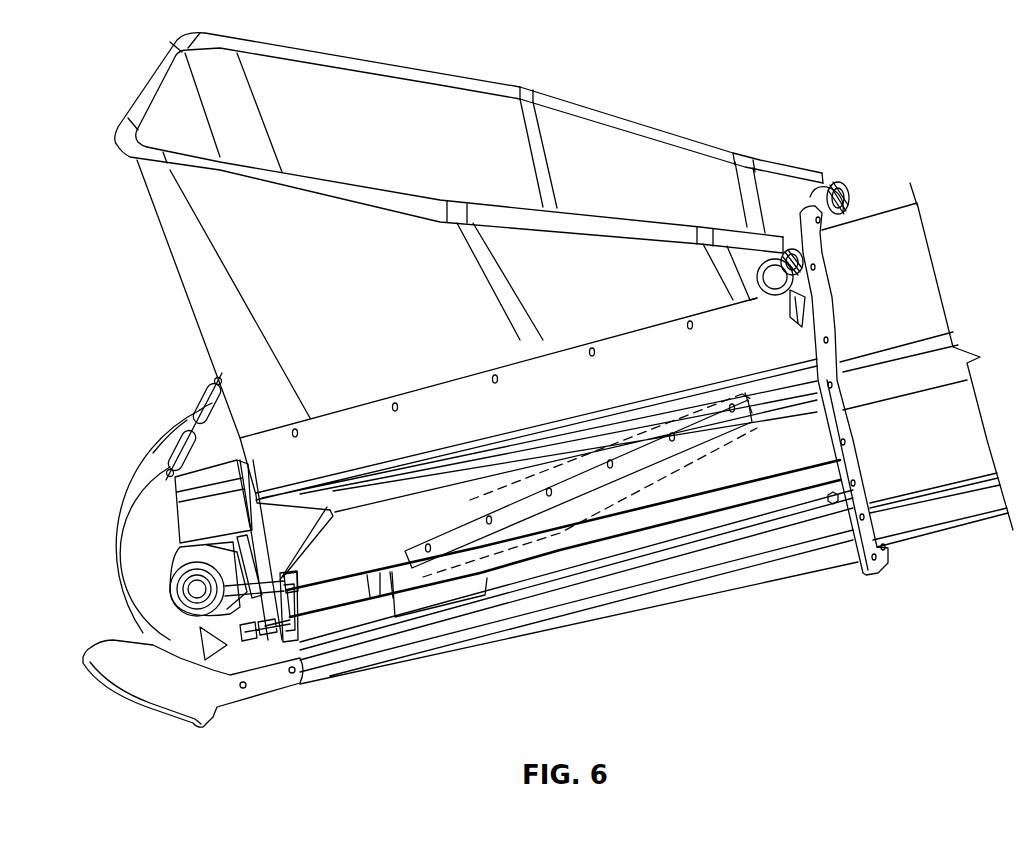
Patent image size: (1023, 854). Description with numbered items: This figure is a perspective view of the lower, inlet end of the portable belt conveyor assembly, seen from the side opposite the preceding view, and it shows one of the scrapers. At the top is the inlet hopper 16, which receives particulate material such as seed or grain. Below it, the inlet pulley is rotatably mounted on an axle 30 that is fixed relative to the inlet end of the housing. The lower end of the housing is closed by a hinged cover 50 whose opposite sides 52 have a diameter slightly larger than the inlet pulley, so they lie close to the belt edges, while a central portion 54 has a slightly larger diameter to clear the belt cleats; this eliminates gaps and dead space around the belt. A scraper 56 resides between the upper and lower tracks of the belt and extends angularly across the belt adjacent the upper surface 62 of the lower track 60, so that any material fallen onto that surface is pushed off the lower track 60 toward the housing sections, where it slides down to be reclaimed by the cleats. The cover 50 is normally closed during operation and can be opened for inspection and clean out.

The inlet hopper 16 is at (193, 275).
The axle 30 is at (193, 590).
The hinged cover 50 is at (137, 488).
The sides 52 is at (147, 580).
The central portion 54 is at (127, 518).
The scraper 56 is at (515, 508).
The lower track 60 is at (732, 463).
The upper surface 62 is at (778, 458).